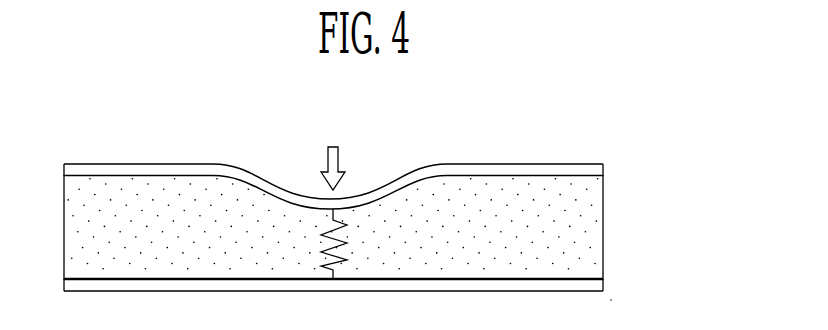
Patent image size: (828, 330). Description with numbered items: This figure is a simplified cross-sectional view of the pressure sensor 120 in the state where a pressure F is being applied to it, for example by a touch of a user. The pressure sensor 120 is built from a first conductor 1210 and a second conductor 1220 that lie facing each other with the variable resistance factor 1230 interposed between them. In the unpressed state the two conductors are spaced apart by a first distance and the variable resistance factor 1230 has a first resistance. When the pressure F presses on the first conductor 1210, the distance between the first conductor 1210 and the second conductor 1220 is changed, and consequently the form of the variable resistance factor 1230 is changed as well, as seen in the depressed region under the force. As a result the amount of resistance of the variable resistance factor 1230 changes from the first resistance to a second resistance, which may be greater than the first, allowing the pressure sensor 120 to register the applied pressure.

The pressure sensor 120 is at (592, 110).
The first conductor 1210 is at (600, 168).
The variable resistance factor 1230 is at (600, 232).
The second conductor 1220 is at (600, 285).